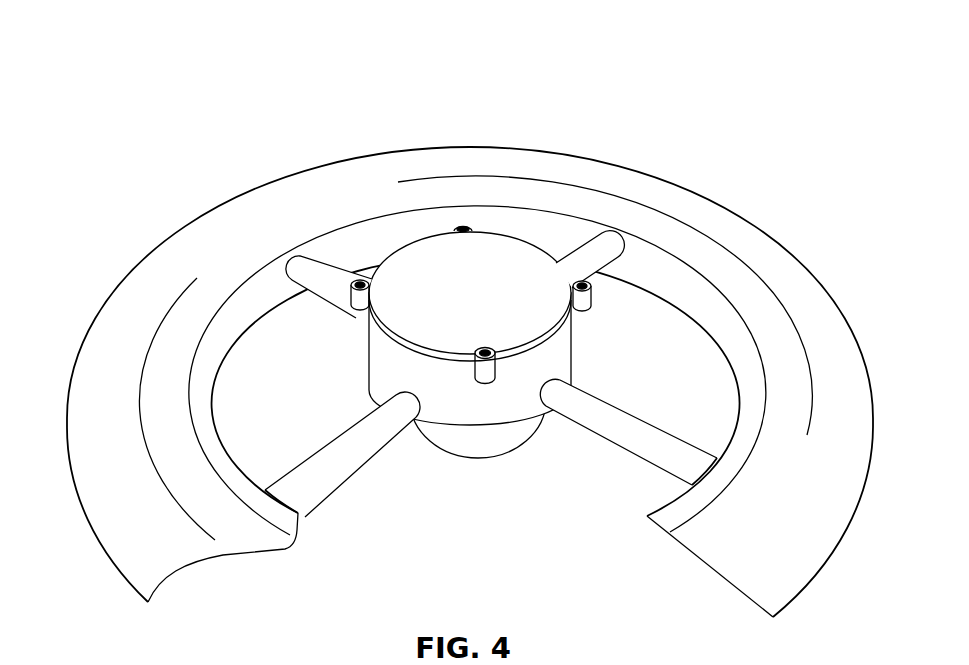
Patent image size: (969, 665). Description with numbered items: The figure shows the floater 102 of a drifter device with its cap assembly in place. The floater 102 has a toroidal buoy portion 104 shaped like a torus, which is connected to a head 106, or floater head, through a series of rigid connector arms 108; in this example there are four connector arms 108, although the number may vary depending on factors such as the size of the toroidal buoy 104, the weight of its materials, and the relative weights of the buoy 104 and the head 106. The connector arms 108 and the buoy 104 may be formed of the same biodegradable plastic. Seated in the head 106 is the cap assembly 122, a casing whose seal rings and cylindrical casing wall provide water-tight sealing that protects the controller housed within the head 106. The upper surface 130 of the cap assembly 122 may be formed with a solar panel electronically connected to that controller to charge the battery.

The floater 102 is at (470, 351).
The toroidal buoy portion 104 is at (728, 206).
The head 106 is at (512, 343).
The connector arms 108 is at (328, 294).
The cap assembly 122 is at (412, 267).
The upper surface 130 is at (459, 295).